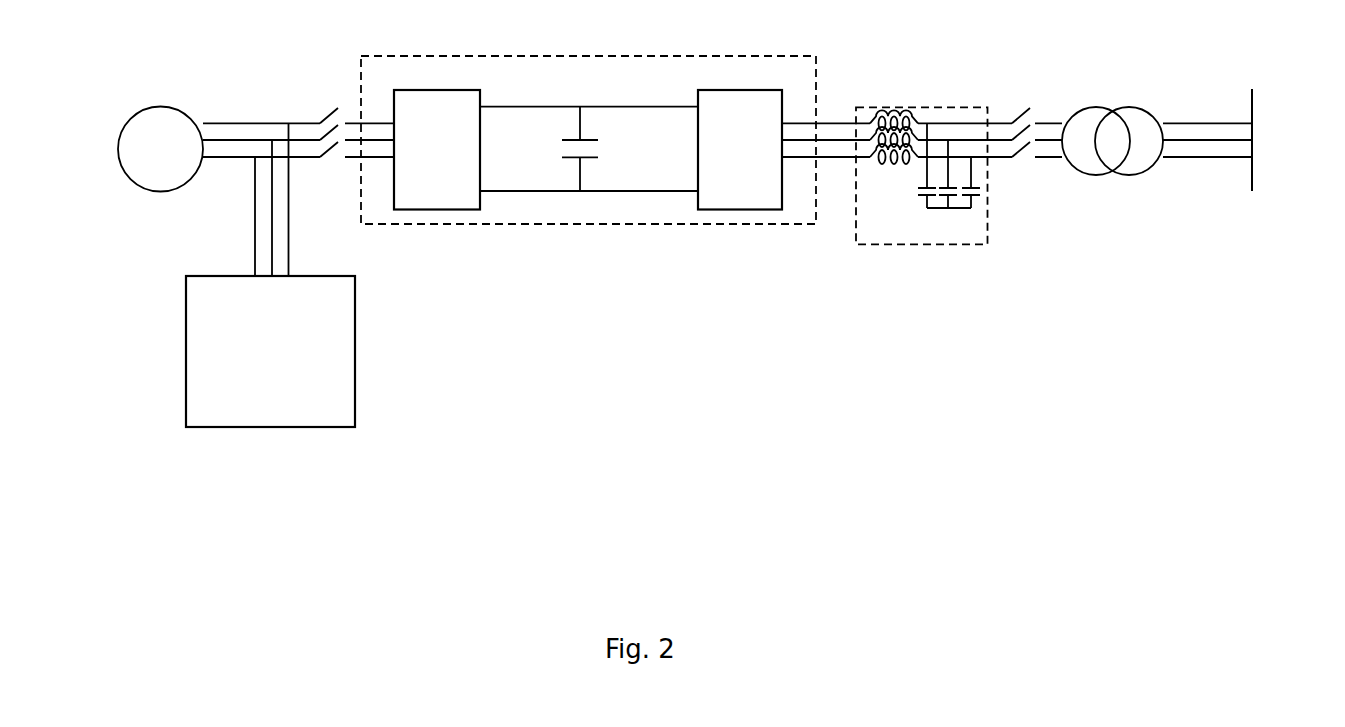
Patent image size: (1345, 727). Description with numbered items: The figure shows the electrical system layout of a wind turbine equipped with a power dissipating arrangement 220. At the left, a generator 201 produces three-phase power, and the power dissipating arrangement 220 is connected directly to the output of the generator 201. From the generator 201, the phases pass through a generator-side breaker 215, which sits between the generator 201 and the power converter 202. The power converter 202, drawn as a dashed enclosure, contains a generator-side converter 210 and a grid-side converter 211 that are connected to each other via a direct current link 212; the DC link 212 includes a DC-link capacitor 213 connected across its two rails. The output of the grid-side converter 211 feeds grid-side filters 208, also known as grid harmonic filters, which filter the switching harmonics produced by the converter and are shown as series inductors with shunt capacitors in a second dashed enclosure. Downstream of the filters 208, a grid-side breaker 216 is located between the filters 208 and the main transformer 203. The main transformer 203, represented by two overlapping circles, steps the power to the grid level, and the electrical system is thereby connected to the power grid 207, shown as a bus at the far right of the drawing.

The generator 201 is at (153, 107).
The generator-side breaker 215 is at (357, 120).
The power dissipating arrangement 220 is at (286, 362).
The power converter 202 is at (817, 90).
The generator-side converter 210 is at (445, 127).
The DC link 212 is at (497, 106).
The DC-link capacitor 213 is at (580, 173).
The grid-side converter 211 is at (748, 127).
The grid-side filters 208 is at (928, 107).
The grid-side breaker 216 is at (1036, 120).
The main transformer 203 is at (1120, 107).
The power grid 207 is at (1252, 123).